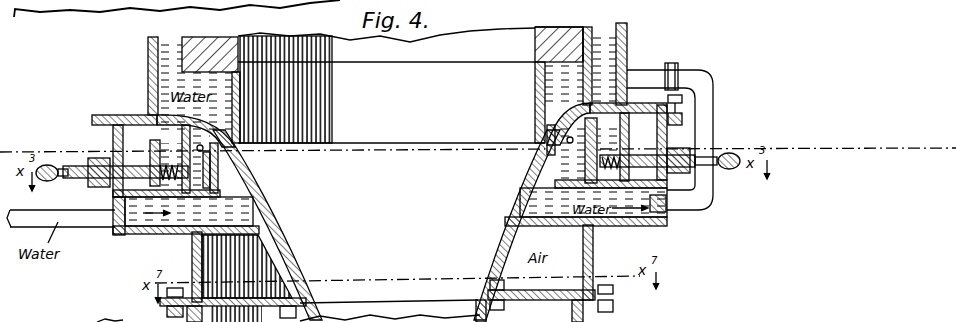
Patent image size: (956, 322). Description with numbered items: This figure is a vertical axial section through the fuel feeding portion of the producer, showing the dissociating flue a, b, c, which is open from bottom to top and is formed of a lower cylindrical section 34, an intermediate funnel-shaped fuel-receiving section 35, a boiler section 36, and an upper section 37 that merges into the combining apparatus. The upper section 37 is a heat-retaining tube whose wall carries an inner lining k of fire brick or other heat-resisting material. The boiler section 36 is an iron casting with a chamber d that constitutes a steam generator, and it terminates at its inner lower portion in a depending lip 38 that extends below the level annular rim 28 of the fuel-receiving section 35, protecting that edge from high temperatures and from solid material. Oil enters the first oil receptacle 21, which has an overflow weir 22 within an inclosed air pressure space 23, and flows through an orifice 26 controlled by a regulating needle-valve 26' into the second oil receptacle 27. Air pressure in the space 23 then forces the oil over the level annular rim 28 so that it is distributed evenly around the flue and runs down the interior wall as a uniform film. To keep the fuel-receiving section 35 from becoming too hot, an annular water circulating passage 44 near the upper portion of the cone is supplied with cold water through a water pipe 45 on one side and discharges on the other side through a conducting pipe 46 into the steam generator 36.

The dissociating flue lower portion a is at (389, 309).
The dissociating flue intermediate portion b is at (478, 215).
The dissociating flue upper portion c is at (391, 85).
The chamber d is at (158, 62).
The inner lining k is at (560, 29).
The first oil receptacle 21 is at (166, 150).
The overflow weir 22 is at (645, 142).
The inclosed air pressure space 23 is at (113, 149).
The orifice 26 is at (373, 189).
The regulating needle-valve 26' is at (390, 225).
The second oil receptacle 27 is at (216, 182).
The level annular rim 28 is at (237, 133).
The lower cylindrical section 34 is at (503, 314).
The funnel-shaped fuel-receiving section 35 is at (508, 232).
The boiler section 36 is at (540, 90).
The upper section 37 is at (535, 45).
The depending lip 38 is at (335, 89).
The annular water circulating passage 44 is at (236, 213).
The water pipe 45 is at (100, 220).
The conducting pipe 46 is at (705, 102).